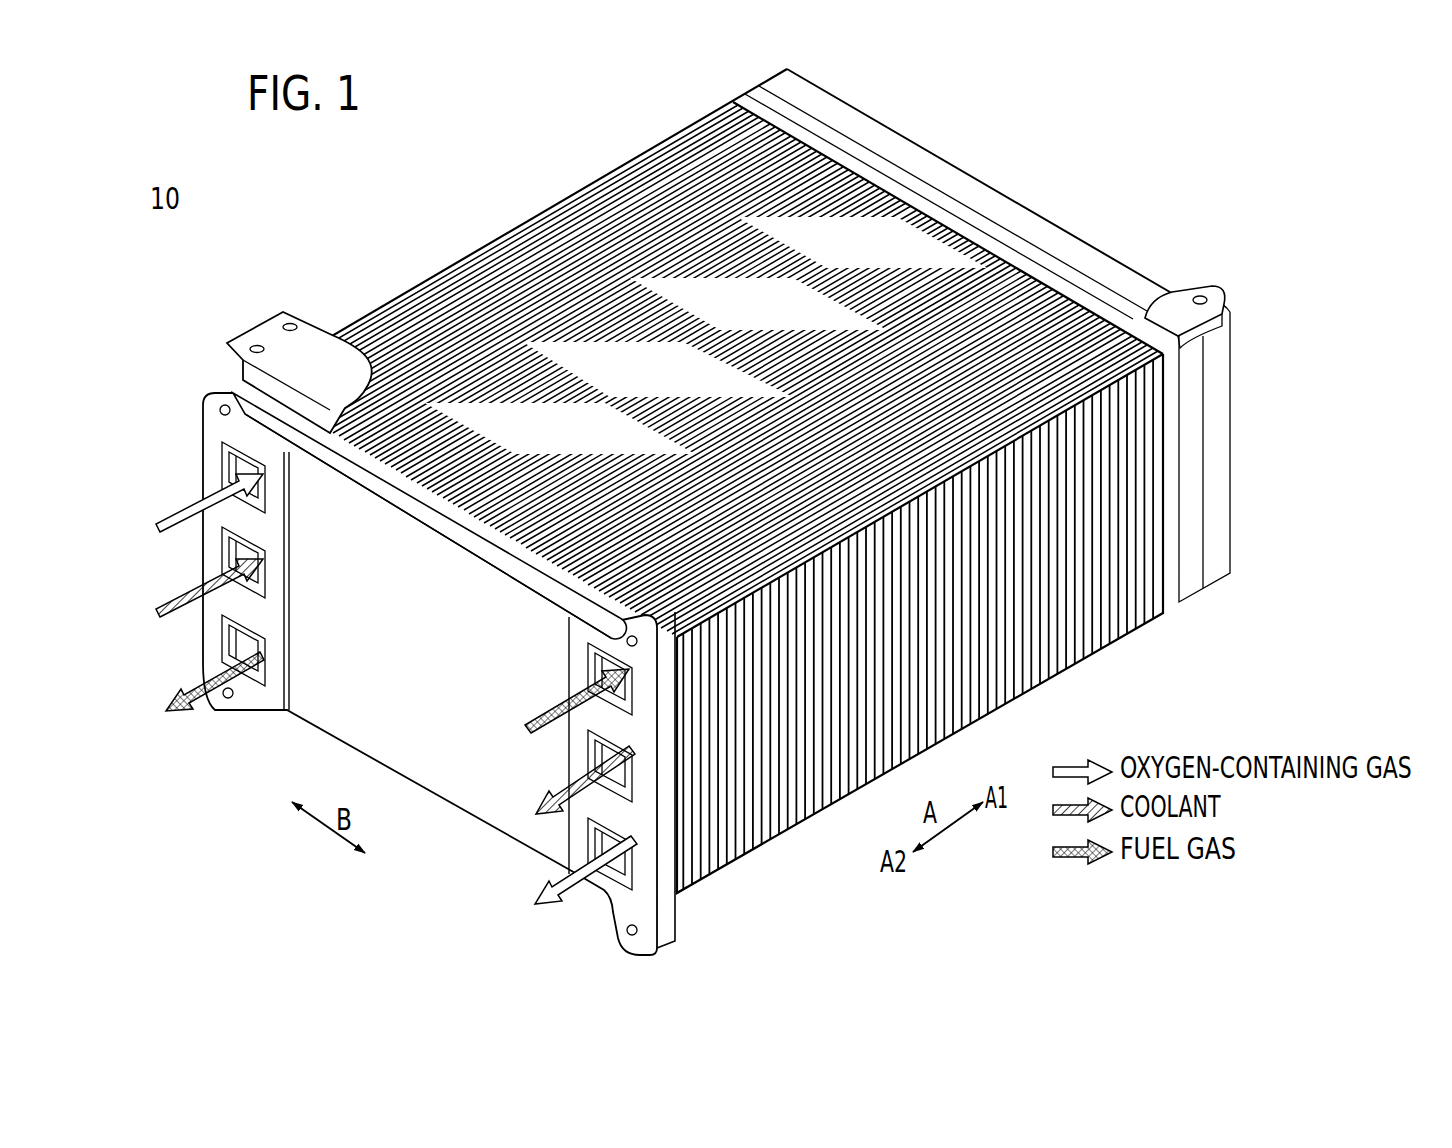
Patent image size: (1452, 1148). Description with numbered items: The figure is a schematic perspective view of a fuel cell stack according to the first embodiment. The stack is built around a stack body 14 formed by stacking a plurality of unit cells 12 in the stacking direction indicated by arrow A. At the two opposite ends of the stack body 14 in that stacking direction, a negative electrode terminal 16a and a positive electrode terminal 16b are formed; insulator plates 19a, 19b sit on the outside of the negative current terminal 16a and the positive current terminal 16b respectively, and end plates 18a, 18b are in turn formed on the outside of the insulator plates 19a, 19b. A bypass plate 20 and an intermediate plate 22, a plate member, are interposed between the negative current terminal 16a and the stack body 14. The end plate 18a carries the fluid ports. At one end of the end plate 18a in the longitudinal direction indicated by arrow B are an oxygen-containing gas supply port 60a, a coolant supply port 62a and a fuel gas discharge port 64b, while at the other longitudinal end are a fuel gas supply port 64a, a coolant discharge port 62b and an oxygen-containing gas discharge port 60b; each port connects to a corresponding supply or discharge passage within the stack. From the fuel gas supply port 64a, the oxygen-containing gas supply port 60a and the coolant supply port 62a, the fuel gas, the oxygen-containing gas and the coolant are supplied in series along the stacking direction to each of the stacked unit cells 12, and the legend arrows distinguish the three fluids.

The unit cell 12 is at (512, 220).
The stack body 14 is at (706, 481).
The negative electrode terminal 16a is at (250, 338).
The positive electrode terminal 16b is at (1180, 320).
The end plate 18a is at (470, 800).
The end plate 18b is at (1012, 182).
The insulator plate 19a is at (692, 880).
The insulator plate 19b is at (882, 184).
The bypass plate 20 is at (390, 470).
The intermediate plate 22 is at (362, 440).
The oxygen-containing gas supply port 60a is at (246, 481).
The oxygen-containing gas discharge port 60b is at (618, 868).
The coolant supply port 62a is at (248, 566).
The coolant discharge port 62b is at (618, 752).
The fuel gas supply port 64a is at (620, 662).
The fuel gas discharge port 64b is at (238, 640).